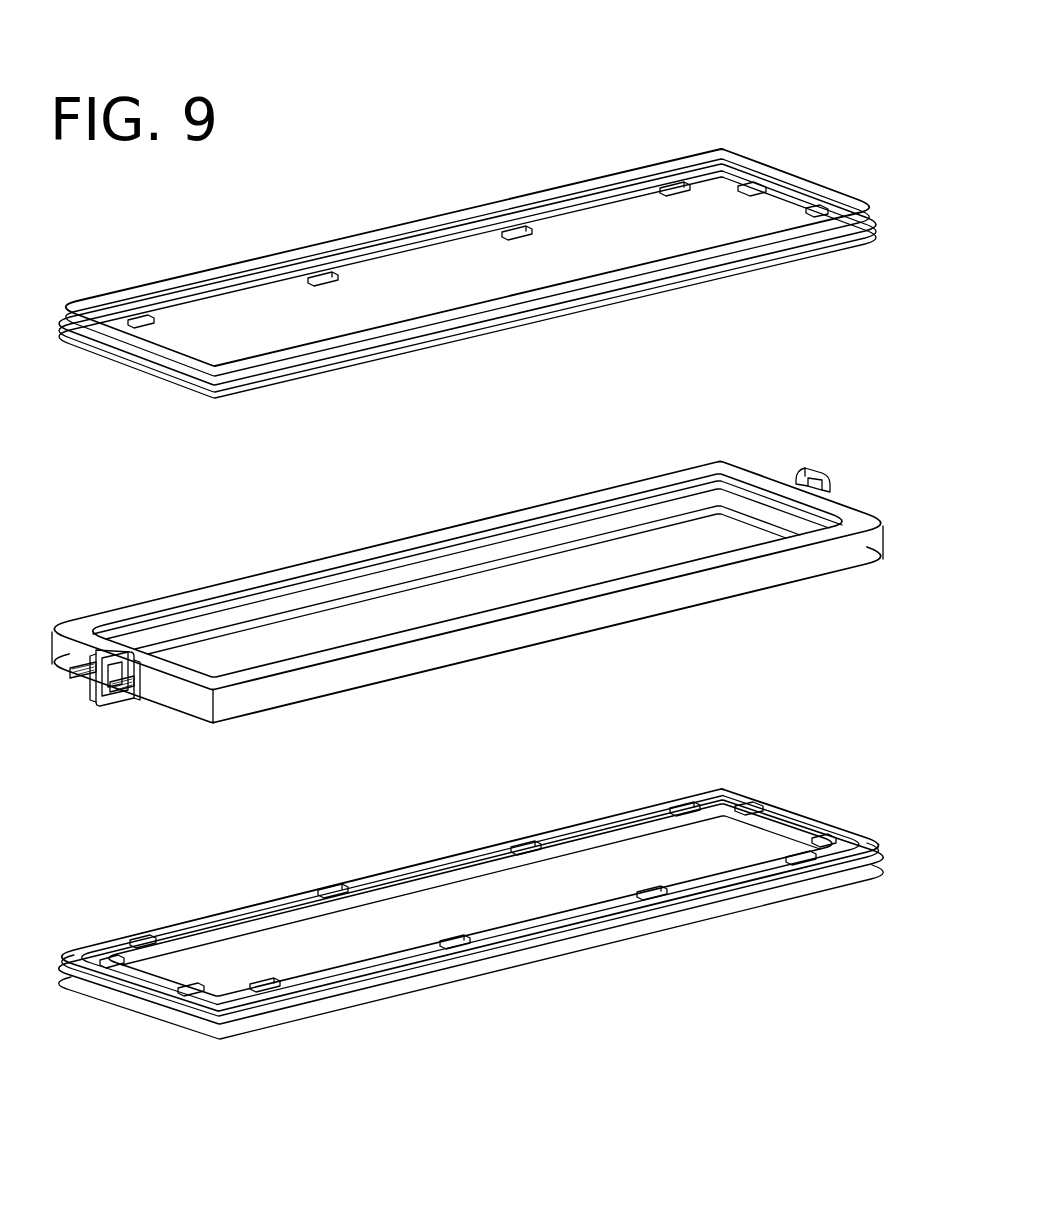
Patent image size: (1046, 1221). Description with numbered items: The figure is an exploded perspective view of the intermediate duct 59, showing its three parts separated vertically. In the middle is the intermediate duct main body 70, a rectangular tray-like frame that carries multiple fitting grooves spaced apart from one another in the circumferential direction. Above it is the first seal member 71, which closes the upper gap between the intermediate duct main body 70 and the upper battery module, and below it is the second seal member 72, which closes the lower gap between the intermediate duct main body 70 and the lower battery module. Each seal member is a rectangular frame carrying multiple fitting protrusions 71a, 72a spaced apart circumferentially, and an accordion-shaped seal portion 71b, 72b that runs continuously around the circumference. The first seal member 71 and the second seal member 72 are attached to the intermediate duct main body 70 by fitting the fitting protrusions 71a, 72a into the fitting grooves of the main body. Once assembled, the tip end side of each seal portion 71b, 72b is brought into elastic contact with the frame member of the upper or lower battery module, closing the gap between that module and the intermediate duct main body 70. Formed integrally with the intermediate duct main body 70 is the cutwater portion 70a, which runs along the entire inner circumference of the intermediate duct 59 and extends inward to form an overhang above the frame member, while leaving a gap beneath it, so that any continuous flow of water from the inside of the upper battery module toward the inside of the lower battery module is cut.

The intermediate duct 59 is at (827, 86).
The first seal member 71 is at (733, 148).
The fitting protrusions 71a is at (513, 230).
The seal portion 71b is at (617, 258).
The intermediate duct main body 70 is at (733, 460).
The cutwater portion 70a is at (495, 560).
The second seal member 72 is at (727, 790).
The fitting protrusions 72a is at (522, 842).
The seal portion 72b is at (538, 963).